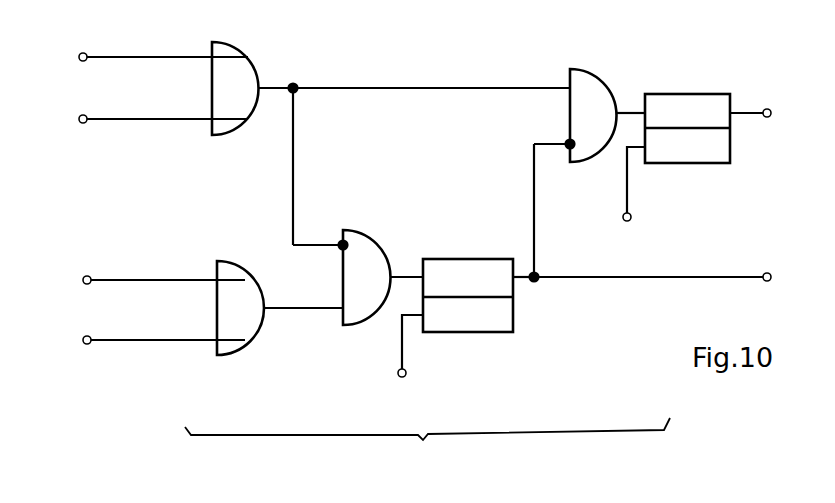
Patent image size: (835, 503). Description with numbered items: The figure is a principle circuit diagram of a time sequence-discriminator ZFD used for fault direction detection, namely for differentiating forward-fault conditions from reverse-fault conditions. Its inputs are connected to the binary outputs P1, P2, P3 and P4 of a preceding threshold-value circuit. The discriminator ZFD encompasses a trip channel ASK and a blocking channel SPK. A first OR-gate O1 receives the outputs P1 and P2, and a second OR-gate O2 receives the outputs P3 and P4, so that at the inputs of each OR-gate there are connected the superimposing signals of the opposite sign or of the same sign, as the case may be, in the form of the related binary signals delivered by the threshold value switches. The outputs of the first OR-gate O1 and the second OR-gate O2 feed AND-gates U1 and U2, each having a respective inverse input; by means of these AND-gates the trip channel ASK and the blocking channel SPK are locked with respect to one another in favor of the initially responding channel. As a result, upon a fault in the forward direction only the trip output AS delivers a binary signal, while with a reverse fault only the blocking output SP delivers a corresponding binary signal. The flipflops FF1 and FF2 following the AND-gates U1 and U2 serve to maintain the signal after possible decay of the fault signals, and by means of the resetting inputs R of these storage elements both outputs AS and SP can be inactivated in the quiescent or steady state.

The output P1 is at (150, 58).
The output P2 is at (150, 121).
The output P3 is at (150, 282).
The output P4 is at (150, 342).
The first OR-gate O1 is at (258, 70).
The second OR-gate O2 is at (232, 262).
The AND-gate U1 is at (600, 73).
The AND-gate U2 is at (370, 235).
The flipflop FF1 is at (682, 165).
The flipflop FF2 is at (475, 333).
The resetting input R is at (520, 274).
The trip output AS is at (755, 98).
The blocking output SP is at (655, 259).
The trip channel ASK is at (410, 146).
The blocking channel SPK is at (318, 393).
The time sequence-discriminator ZFD is at (450, 465).